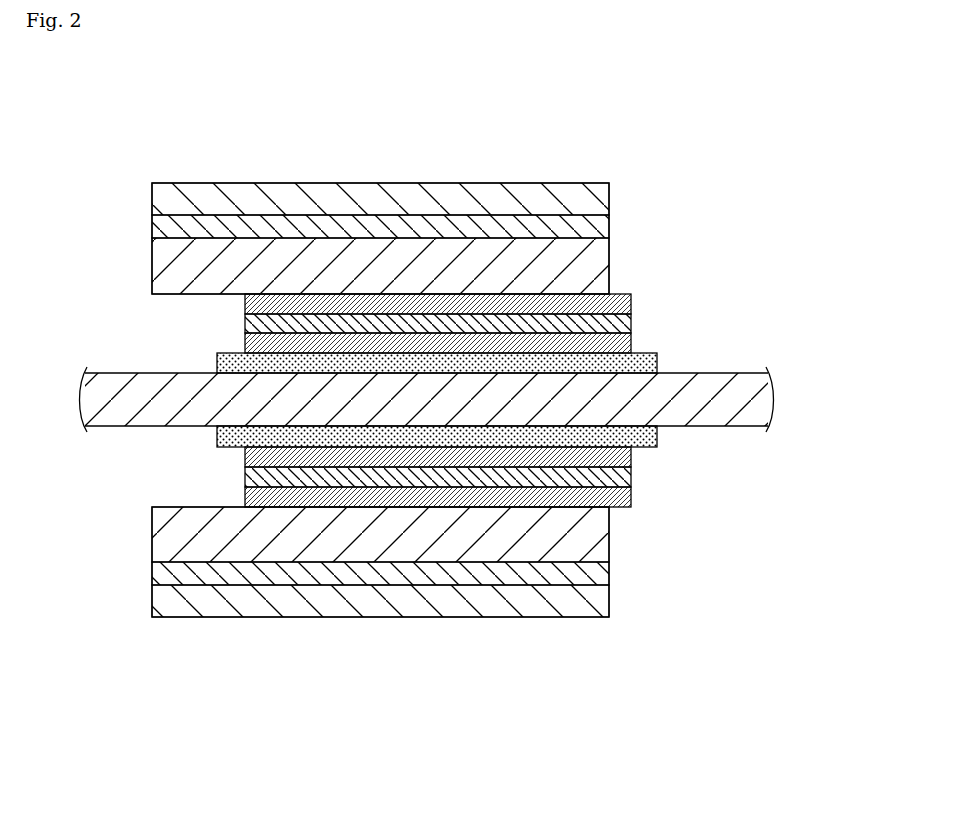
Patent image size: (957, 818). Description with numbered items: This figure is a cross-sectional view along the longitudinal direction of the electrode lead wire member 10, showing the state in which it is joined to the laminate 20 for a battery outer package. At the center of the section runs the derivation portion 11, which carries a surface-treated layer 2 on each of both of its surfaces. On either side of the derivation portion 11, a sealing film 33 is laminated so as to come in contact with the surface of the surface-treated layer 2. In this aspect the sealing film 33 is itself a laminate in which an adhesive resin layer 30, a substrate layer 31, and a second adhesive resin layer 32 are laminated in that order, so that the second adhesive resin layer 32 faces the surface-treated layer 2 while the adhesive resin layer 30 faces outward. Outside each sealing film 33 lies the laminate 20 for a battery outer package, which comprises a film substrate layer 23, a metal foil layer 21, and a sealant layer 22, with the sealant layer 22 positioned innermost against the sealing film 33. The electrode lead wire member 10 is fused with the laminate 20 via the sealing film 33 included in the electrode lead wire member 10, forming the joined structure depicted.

The surface-treated layer 2 is at (657, 365).
The electrode lead wire member 10 is at (489, 400).
The derivation portion 11 is at (762, 402).
The laminate for a battery outer package 20 is at (380, 405).
The metal foil layer 21 is at (288, 237).
The sealant layer 22 is at (207, 110).
The film substrate layer 23 is at (225, 200).
The adhesive resin layer 30 is at (632, 300).
The substrate layer 31 is at (632, 318).
The second adhesive resin layer 32 is at (483, 403).
The sealing film 33 is at (513, 400).